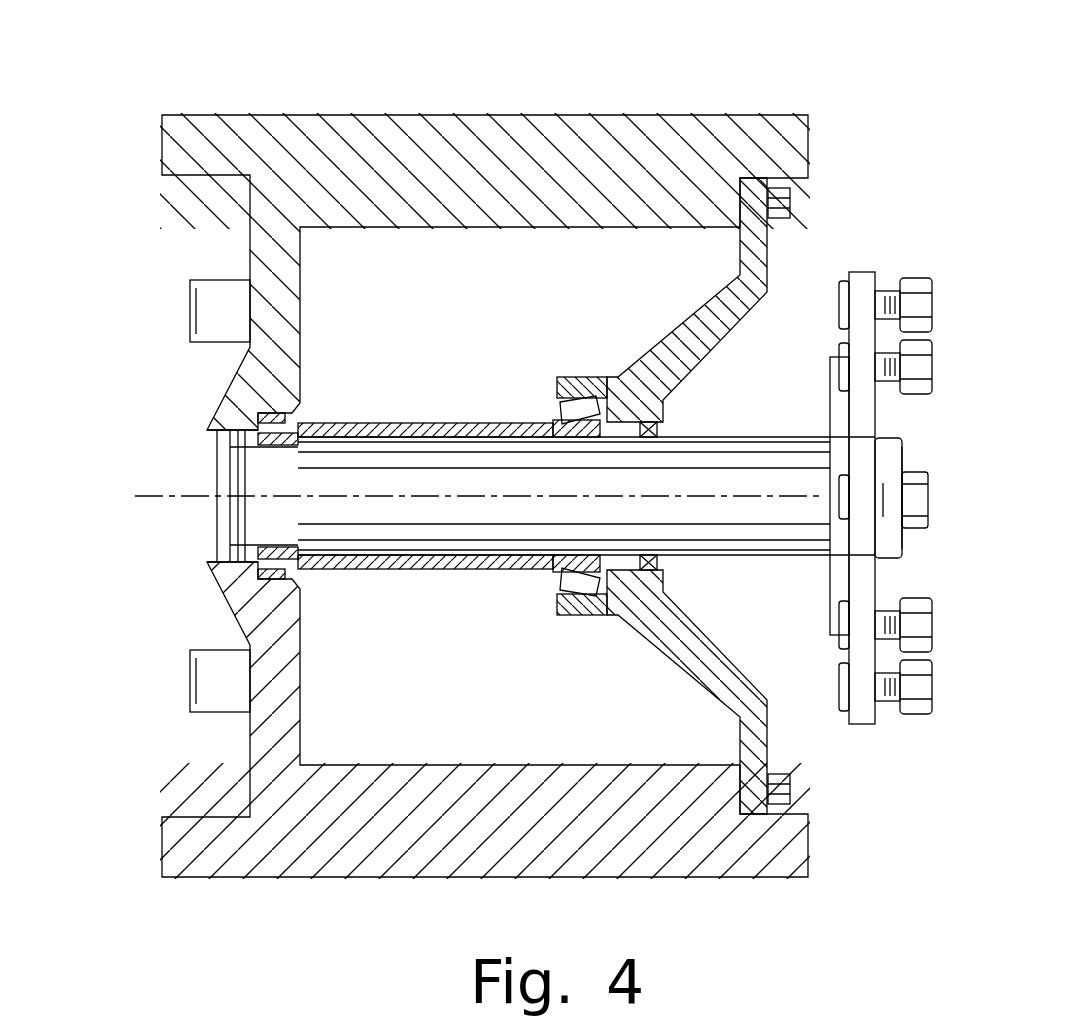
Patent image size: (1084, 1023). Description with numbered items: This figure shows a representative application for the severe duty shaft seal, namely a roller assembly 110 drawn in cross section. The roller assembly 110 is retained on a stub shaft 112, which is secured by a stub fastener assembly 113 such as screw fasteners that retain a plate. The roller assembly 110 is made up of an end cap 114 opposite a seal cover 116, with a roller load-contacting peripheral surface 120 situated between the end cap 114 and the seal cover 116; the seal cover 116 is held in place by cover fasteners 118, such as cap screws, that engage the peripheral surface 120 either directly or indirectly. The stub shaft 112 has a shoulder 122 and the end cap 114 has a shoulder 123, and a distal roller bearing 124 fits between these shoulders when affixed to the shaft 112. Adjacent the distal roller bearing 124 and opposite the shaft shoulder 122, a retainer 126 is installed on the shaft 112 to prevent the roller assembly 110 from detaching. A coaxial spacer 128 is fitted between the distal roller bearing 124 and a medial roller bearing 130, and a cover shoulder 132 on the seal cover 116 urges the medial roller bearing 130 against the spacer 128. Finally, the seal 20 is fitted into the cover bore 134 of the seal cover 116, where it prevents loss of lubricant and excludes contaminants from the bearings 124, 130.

The roller assembly 110 is at (708, 95).
The stub shaft 112 is at (705, 465).
The stub fastener assembly 113 is at (857, 732).
The end cap 114 is at (253, 250).
The seal cover 116 is at (770, 278).
The cover fasteners 118 is at (792, 202).
The roller load-contacting peripheral surface 120 is at (368, 116).
The shoulder 122 is at (208, 446).
The shoulder 123 is at (262, 412).
The distal roller bearing 124 is at (257, 436).
The retainer 126 is at (238, 520).
The coaxial spacer 128 is at (342, 572).
The medial roller bearing 130 is at (575, 578).
The cover shoulder 132 is at (572, 580).
The cover bore 134 is at (660, 394).
The seal 20 is at (655, 571).